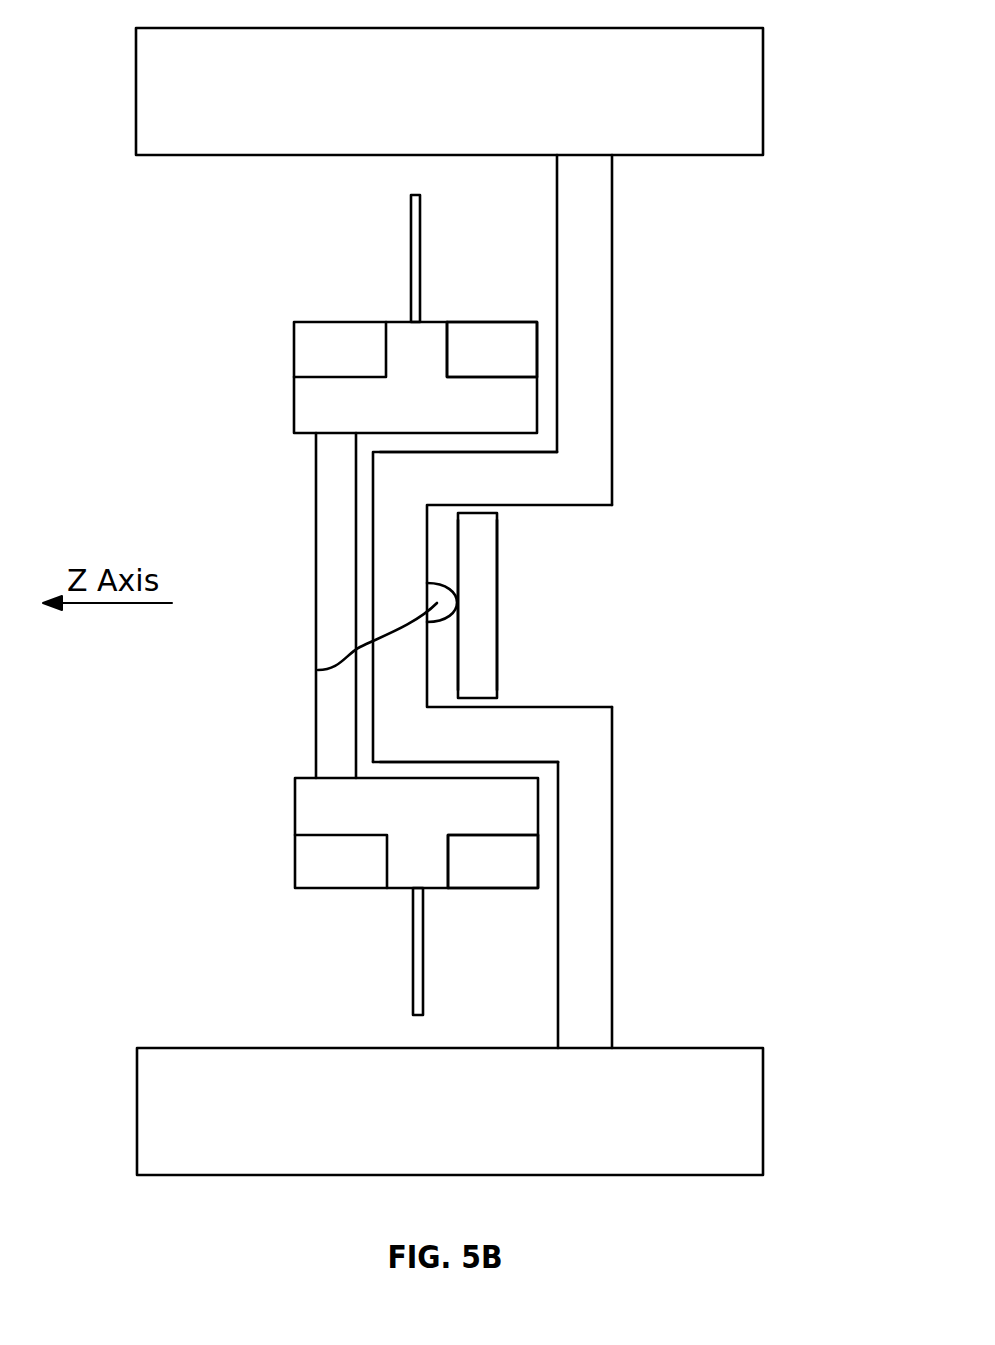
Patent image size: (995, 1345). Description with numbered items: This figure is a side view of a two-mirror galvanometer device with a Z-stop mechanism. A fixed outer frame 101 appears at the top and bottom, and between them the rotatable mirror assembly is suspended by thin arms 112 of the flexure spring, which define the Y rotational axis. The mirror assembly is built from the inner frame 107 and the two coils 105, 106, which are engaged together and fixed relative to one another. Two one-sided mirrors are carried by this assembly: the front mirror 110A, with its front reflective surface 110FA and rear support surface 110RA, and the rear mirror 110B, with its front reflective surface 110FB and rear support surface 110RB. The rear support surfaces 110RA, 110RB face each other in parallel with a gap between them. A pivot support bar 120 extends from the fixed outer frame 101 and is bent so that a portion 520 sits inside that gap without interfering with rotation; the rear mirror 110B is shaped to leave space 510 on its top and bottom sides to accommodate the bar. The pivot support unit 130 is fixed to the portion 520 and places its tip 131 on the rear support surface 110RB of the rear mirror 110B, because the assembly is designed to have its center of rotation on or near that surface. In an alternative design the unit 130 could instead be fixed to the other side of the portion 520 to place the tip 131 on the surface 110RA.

The fixed outer frame 101 is at (215, 27).
The coil 105 is at (293, 349).
The coil 106 is at (513, 320).
The inner frame 107 is at (293, 408).
The front mirror 110A is at (274, 605).
The front reflective surface 110FA is at (315, 478).
The rear support surface 110RA is at (356, 684).
The rear mirror 110B is at (543, 605).
The front reflective surface 110FB is at (498, 642).
The rear support surface 110RB is at (460, 687).
The thin arms 112 is at (412, 257).
The pivot support bar 120 is at (612, 262).
The pivot support unit 130 is at (318, 670).
The pivot point 131 is at (457, 603).
The space 510 is at (457, 440).
The portion 520 is at (452, 496).